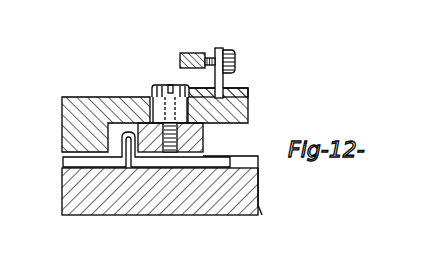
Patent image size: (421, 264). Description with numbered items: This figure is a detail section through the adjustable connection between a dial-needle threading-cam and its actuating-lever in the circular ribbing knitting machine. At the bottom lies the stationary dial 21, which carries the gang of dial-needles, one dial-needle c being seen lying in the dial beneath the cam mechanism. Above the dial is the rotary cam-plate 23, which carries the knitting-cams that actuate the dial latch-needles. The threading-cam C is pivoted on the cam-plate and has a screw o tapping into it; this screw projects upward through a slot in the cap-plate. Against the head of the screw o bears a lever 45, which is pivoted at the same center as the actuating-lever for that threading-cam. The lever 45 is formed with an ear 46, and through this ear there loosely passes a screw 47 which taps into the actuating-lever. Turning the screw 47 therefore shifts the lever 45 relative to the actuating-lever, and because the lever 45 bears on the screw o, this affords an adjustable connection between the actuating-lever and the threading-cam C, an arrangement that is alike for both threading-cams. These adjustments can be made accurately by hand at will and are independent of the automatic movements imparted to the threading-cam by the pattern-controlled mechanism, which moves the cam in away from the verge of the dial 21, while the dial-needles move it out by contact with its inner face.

The dial 21 is at (259, 194).
The cam-plate 23 is at (62, 104).
The lever 45 is at (221, 94).
The ear 46 is at (219, 48).
The screw 47 is at (232, 49).
The clamp block K is at (185, 53).
The threading-cam C is at (205, 136).
The dial-needle c is at (63, 165).
The screw o is at (157, 85).